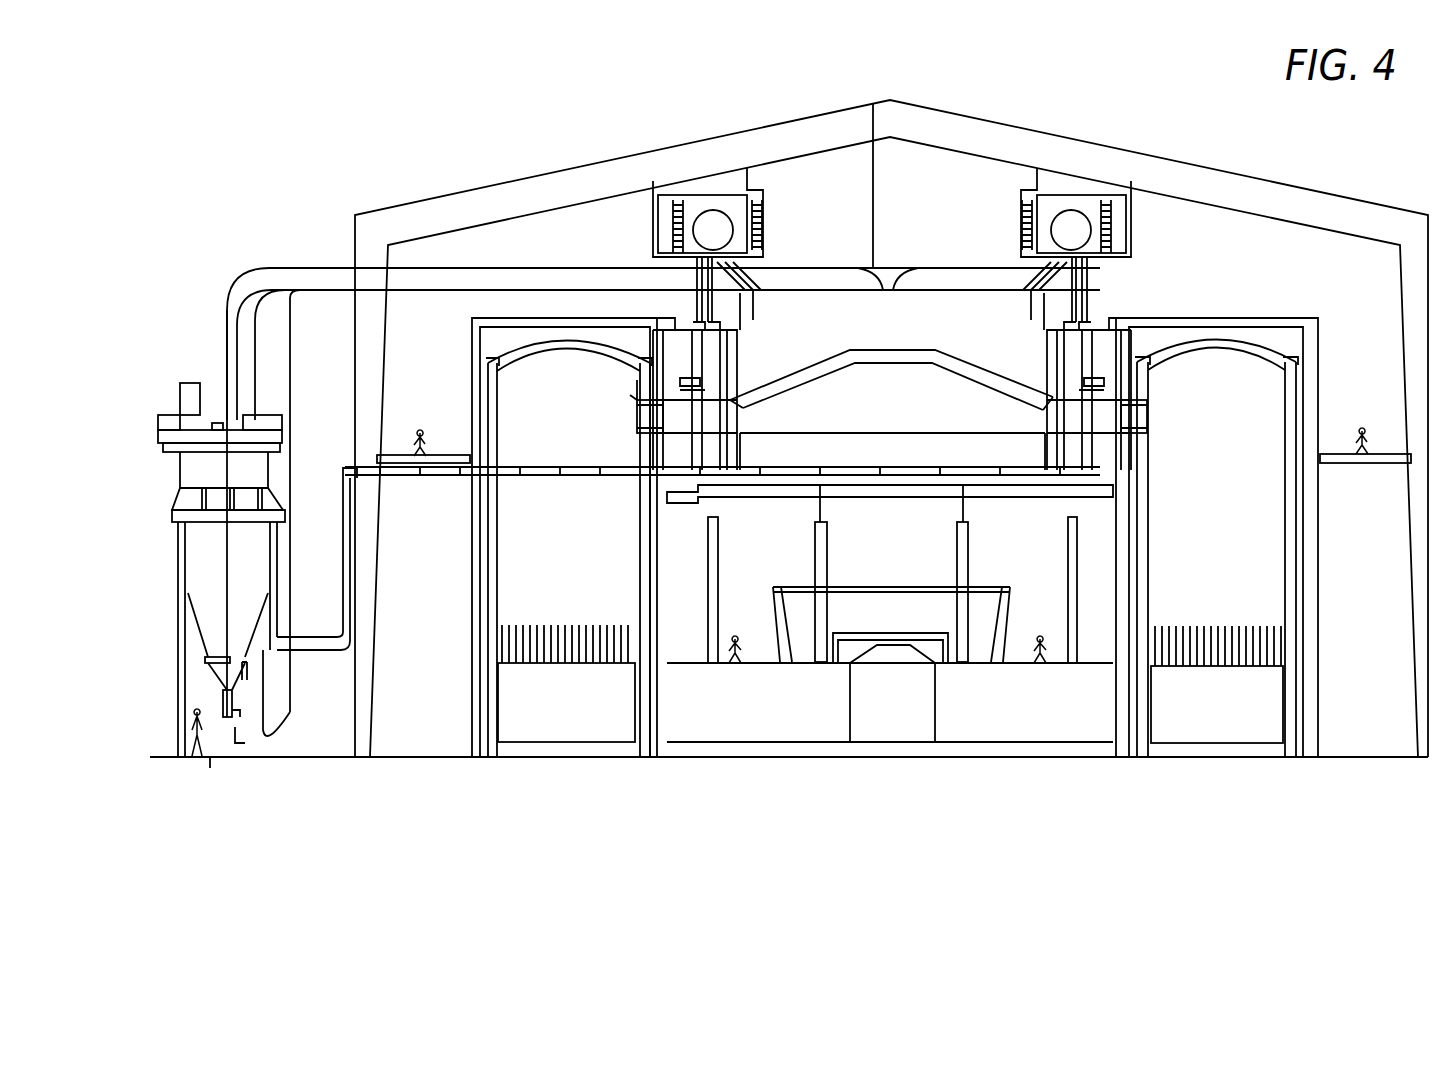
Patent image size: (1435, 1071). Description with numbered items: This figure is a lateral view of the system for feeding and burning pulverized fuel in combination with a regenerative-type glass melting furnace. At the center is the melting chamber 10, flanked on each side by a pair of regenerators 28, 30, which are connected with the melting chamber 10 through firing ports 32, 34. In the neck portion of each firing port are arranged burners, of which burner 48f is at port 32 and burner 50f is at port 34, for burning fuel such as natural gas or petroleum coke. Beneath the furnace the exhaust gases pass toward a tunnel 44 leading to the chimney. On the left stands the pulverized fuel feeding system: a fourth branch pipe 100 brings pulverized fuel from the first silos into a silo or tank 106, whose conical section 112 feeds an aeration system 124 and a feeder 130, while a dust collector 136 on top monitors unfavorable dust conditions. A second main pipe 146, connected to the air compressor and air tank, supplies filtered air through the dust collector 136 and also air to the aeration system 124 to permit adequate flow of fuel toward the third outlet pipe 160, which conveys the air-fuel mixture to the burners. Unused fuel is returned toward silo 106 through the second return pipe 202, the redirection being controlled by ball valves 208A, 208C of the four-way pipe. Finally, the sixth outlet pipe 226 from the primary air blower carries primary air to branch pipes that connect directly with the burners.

The melting chamber 10 is at (979, 450).
The regenerator 28 is at (567, 593).
The regenerator 30 is at (1228, 501).
The firing port 32 is at (648, 418).
The firing port 34 is at (1133, 408).
The tunnel 44 is at (885, 710).
The burner 48f is at (698, 400).
The burner 50f is at (1067, 410).
The fourth branch pipe 100 is at (265, 292).
The silo or tank 106 is at (178, 515).
The conical section 112 is at (208, 573).
The aeration system 124 is at (213, 664).
The feeder 130 is at (213, 688).
The dust collector 136 is at (183, 393).
The second main pipe 146 is at (228, 300).
The third outlet pipe 160 is at (478, 265).
The second return pipe 202 is at (255, 348).
The ball valve 208A is at (873, 270).
The ball valve 208C is at (903, 287).
The sixth outlet pipe 226 is at (1096, 335).